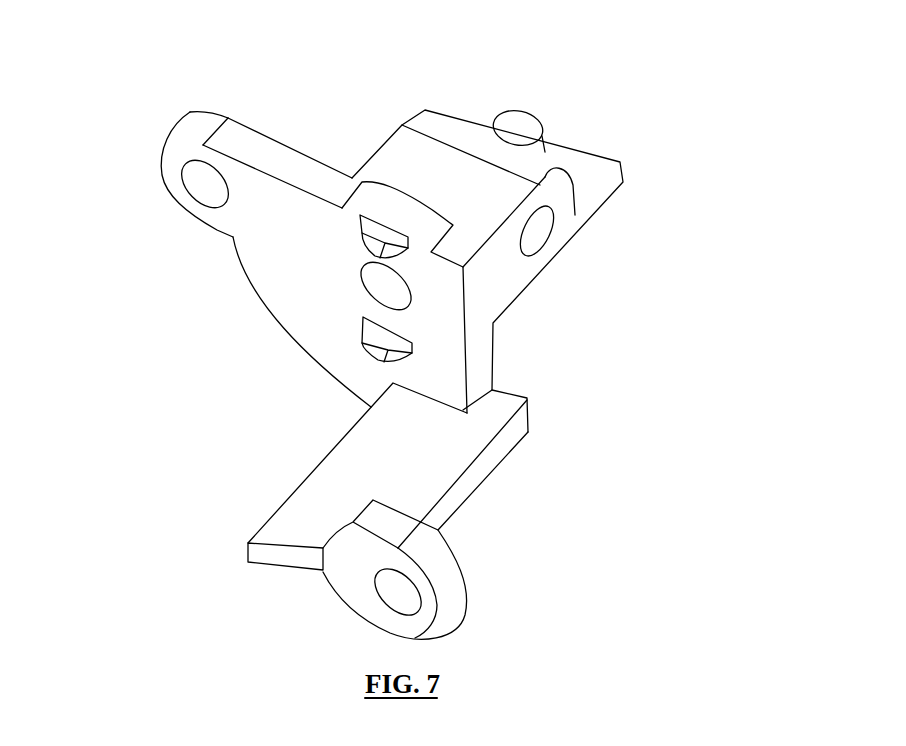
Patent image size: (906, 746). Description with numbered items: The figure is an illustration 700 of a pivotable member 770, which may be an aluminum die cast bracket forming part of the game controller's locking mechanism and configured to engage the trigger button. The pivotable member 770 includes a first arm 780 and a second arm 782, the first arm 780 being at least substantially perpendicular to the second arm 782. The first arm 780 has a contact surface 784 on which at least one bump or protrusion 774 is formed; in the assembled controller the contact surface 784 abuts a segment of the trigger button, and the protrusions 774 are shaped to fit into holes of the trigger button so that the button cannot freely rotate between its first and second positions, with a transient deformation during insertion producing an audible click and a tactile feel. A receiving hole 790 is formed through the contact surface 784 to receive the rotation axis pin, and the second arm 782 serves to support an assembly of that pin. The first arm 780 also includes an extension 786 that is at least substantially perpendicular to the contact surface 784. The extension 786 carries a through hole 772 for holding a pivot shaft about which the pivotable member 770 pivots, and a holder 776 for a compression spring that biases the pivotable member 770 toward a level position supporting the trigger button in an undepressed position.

The illustration 700 is at (712, 73).
The pivotable member 770 is at (140, 128).
The through hole 772 is at (541, 231).
The protrusion 774 is at (360, 243).
The holder 776 is at (510, 123).
The first arm 780 is at (530, 312).
The second arm 782 is at (482, 475).
The contact surface 784 is at (285, 207).
The extension 786 is at (558, 255).
The receiving hole 790 is at (402, 293).